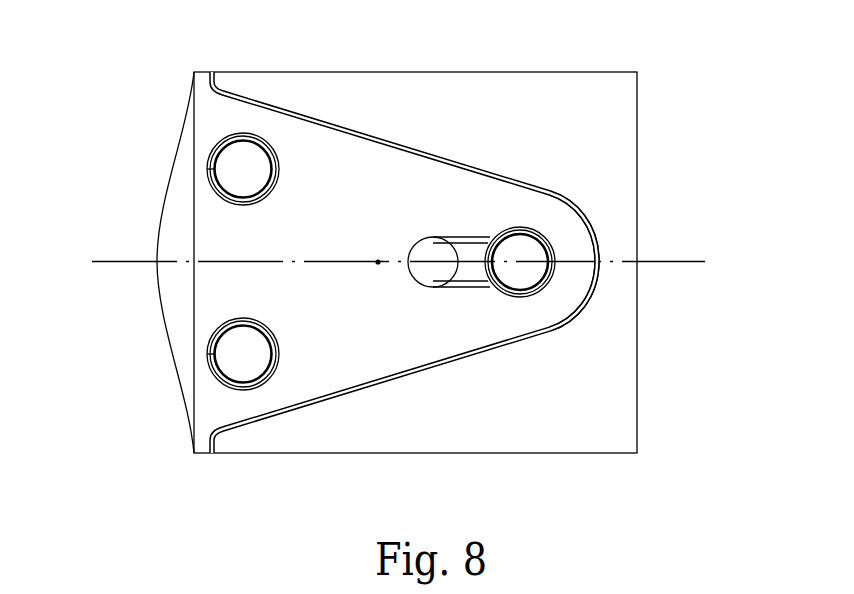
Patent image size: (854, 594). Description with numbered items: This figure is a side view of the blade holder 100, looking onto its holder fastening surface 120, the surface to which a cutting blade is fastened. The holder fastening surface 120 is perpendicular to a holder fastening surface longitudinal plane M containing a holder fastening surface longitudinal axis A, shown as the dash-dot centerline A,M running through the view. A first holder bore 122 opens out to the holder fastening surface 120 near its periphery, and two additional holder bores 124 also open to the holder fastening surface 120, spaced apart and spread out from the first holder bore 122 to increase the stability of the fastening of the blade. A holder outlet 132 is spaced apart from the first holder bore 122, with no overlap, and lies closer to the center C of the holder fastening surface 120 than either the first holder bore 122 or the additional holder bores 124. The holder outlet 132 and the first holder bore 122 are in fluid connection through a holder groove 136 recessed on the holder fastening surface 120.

The blade holder 100 is at (658, 42).
The holder fastening surface 120 is at (295, 140).
The first holder bore 122 is at (563, 237).
The additional holder bore 124 is at (220, 115).
The holder outlet 132 is at (412, 237).
The holder groove 136 is at (476, 233).
The center of the holder fastening surface C is at (377, 258).
The holder fastening surface longitudinal axis and longitudinal plane A,M is at (115, 261).